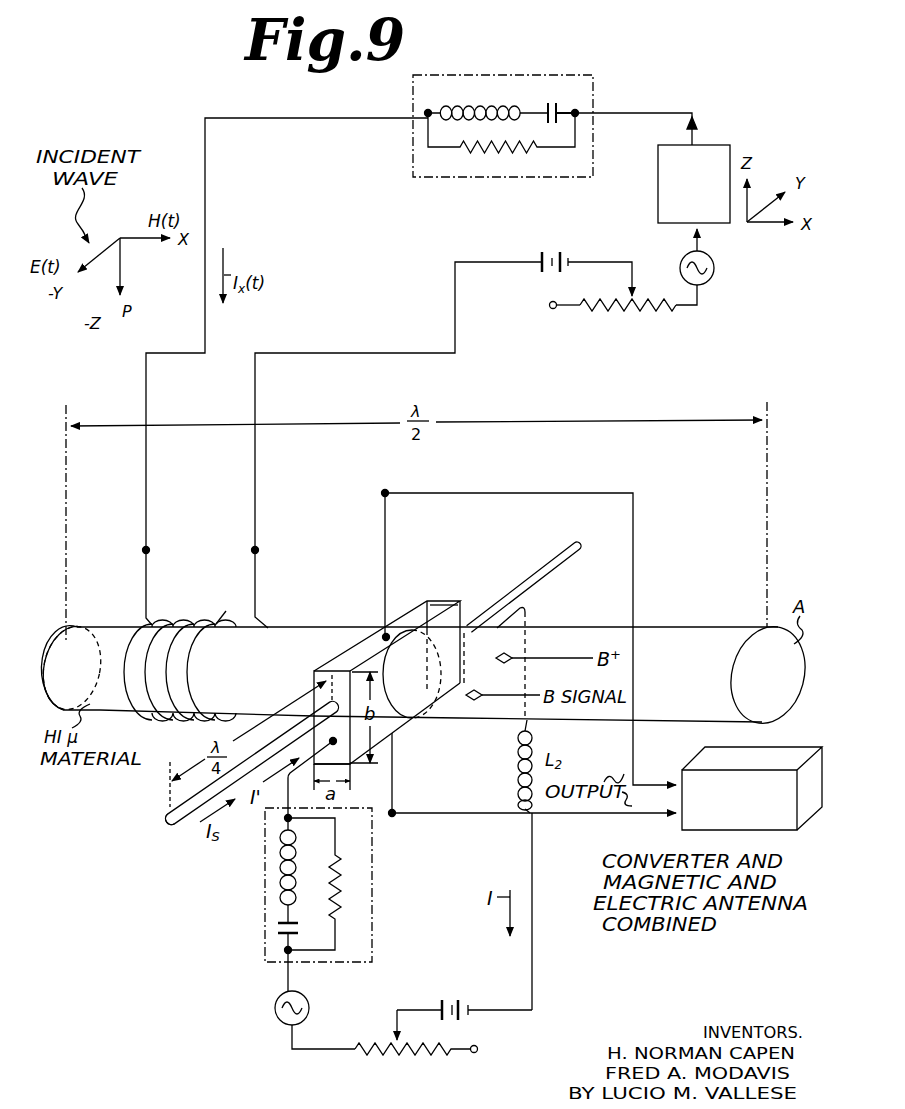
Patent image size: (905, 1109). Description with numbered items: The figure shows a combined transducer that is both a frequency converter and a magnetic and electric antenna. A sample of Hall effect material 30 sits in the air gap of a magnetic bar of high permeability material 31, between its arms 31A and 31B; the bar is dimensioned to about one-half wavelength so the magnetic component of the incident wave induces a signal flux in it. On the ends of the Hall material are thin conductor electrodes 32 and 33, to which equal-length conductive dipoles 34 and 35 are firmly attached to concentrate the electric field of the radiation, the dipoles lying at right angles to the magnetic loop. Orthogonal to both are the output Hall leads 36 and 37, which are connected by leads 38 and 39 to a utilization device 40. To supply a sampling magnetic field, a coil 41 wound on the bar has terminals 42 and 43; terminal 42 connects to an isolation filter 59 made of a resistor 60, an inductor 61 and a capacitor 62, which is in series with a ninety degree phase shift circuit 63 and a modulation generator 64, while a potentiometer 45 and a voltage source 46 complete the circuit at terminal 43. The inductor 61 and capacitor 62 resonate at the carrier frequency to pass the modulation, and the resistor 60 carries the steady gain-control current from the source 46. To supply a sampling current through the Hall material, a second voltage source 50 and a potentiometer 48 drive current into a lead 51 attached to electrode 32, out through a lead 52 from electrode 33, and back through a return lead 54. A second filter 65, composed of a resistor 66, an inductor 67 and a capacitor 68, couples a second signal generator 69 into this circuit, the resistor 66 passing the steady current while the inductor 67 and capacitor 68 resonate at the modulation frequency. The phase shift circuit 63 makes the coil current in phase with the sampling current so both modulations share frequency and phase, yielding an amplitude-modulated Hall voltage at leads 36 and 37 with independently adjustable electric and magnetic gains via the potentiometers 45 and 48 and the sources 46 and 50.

The Hall effect material 30 is at (371, 648).
The magnetic bar of high permeability material 31 is at (778, 706).
The arm of the magnetic focusing bar 31A is at (592, 628).
The arm of the magnetic focusing bar 31B is at (298, 628).
The electrode 32 is at (351, 766).
The electrode 33 is at (470, 584).
The dipole 34 is at (183, 832).
The dipole 35 is at (537, 566).
The output Hall lead 36 is at (388, 546).
The output Hall lead 37 is at (394, 764).
The lead 38 is at (512, 493).
The lead 39 is at (450, 813).
The utilization device 40 is at (682, 829).
The coil 41 is at (172, 624).
The coil terminal 42 is at (148, 554).
The coil terminal 43 is at (257, 554).
The potentiometer R2 45 is at (664, 306).
The source of electromotive force Ex 46 is at (552, 274).
The potentiometer 48 is at (440, 1053).
The source of electromotive potential Ey 50 is at (452, 995).
The lead 51 is at (312, 778).
The lead 52 is at (531, 600).
The return lead 54 is at (533, 880).
The isolation filter 59 is at (413, 156).
The resistor R4 60 is at (530, 150).
The inductor L3 61 is at (466, 108).
The capacitor C1 62 is at (547, 106).
The 90 degree phase shift circuit 63 is at (658, 186).
The modulation generator Ec 64 is at (690, 270).
The filter 65 is at (265, 890).
The resistor R5 66 is at (337, 908).
The inductor L4 67 is at (280, 860).
The capacitor C2 68 is at (278, 932).
The complex signal generator Ec2 69 is at (308, 1015).